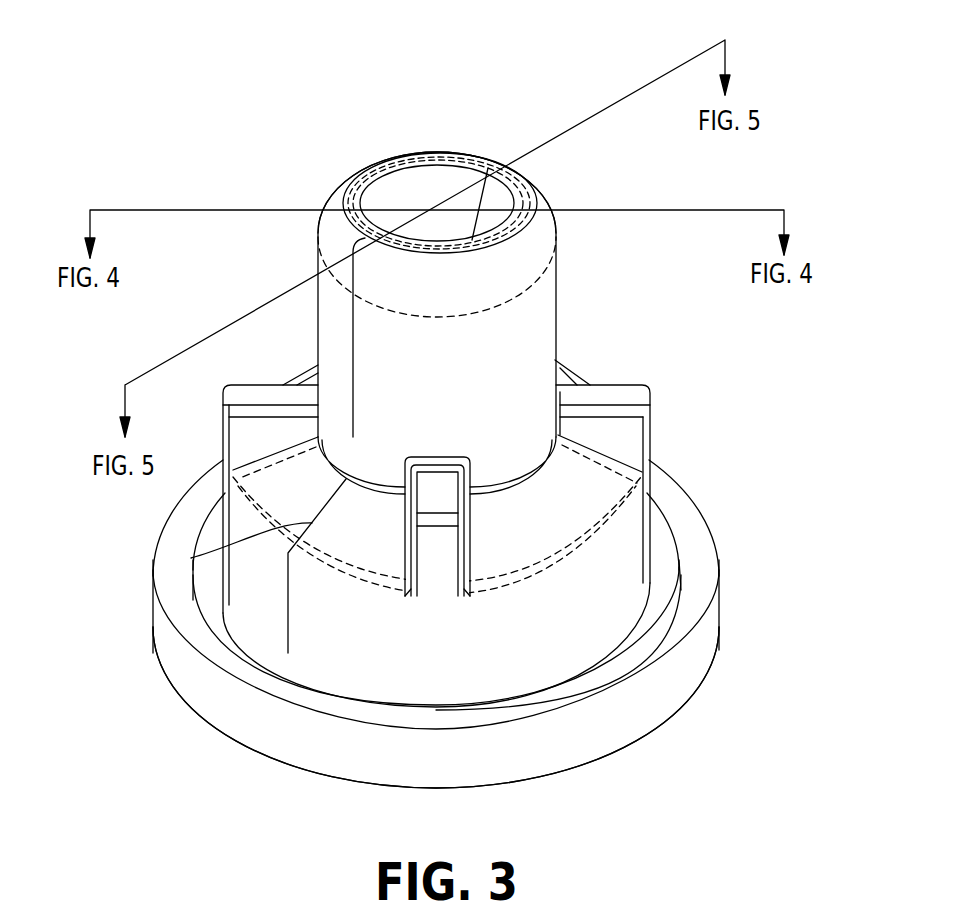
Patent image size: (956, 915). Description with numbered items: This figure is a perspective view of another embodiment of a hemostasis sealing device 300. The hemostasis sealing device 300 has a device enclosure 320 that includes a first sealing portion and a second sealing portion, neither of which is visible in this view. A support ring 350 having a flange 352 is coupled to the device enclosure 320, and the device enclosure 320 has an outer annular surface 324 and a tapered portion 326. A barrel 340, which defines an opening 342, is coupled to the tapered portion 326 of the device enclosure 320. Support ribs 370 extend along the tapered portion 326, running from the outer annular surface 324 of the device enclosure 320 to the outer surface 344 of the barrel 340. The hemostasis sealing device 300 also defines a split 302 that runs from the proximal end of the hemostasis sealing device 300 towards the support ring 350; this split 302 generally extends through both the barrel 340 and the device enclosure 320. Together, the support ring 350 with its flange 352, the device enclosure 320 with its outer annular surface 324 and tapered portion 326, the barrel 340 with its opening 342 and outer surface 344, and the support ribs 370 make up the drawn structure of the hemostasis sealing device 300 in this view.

The hemostasis sealing device 300 is at (333, 172).
The split 302 is at (307, 523).
The device enclosure 320 is at (406, 670).
The outer annular surface 324 is at (597, 593).
The tapered portion 326 is at (537, 543).
The barrel 340 is at (525, 332).
The opening 342 is at (425, 188).
The outer surface 344 is at (517, 388).
The support ring 350 is at (669, 704).
The flange 352 is at (707, 558).
The support ribs 370 is at (623, 395).